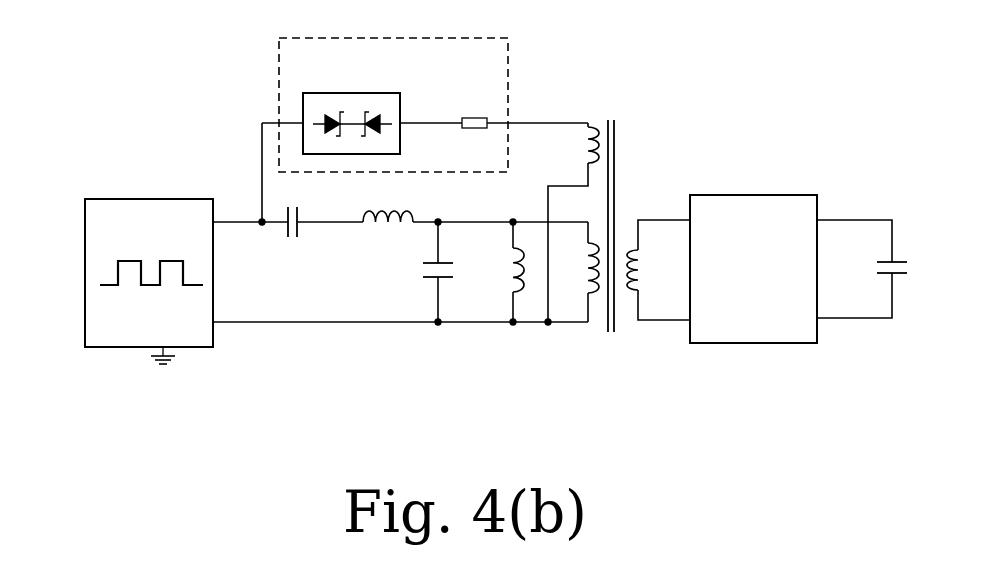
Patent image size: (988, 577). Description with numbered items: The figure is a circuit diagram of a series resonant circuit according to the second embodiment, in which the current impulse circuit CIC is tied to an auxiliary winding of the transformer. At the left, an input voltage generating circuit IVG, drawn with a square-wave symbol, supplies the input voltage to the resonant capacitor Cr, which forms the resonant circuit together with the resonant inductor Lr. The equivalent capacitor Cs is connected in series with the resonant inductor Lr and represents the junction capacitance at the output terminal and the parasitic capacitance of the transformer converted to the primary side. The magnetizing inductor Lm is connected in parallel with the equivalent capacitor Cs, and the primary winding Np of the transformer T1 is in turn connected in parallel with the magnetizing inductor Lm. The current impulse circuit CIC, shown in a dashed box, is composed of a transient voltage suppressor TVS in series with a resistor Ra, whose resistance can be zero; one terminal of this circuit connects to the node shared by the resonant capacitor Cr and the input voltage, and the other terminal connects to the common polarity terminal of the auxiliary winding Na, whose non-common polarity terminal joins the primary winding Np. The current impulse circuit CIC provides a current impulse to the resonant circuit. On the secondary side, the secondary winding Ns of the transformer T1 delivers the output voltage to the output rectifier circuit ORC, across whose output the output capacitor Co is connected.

The input voltage generating circuit IVG is at (122, 243).
The current impulse circuit CIC is at (394, 88).
The transient voltage suppressor TVS is at (351, 112).
The resistor Ra is at (474, 109).
The resonant capacitor Cr is at (289, 235).
The resonant inductor Lr is at (388, 238).
The equivalent capacitor Cs is at (424, 272).
The magnetizing inductor Lm is at (506, 272).
The transformer T1 is at (607, 209).
The auxiliary winding Na is at (573, 222).
The primary winding Np is at (582, 272).
The secondary winding Ns is at (658, 270).
The output rectifier circuit ORC is at (753, 269).
The output capacitor Co is at (867, 269).